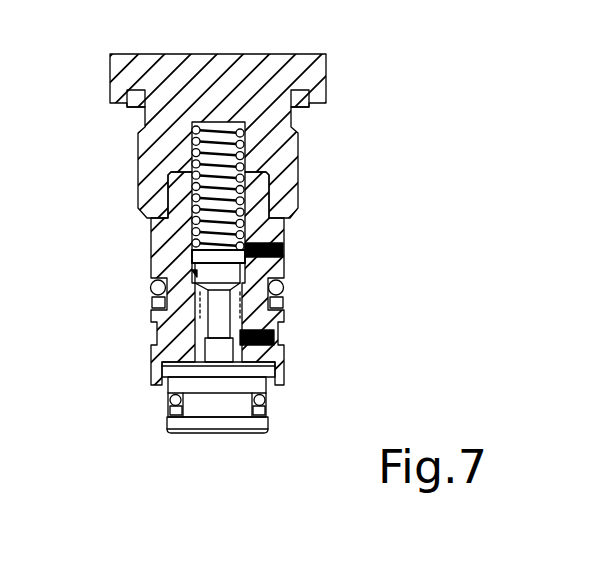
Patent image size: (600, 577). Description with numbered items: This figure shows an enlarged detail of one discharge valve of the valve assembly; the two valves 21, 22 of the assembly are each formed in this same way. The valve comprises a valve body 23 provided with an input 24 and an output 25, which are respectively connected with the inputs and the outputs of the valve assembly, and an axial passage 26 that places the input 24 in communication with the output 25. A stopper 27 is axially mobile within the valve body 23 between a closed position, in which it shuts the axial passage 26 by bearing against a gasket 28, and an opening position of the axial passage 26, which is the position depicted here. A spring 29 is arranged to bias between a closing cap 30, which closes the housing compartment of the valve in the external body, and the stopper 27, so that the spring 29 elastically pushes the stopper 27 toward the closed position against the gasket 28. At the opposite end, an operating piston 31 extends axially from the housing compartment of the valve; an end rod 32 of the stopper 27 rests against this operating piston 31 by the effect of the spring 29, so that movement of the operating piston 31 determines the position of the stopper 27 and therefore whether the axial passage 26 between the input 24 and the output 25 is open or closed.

The valve 21 is at (306, 195).
The valve 22 is at (306, 195).
The valve body 23 is at (159, 265).
The input 24 is at (283, 250).
The output 25 is at (277, 340).
The axial passage 26 is at (276, 333).
The stopper 27 is at (213, 240).
The gasket 28 is at (208, 322).
The spring 29 is at (198, 148).
The closing cap 30 is at (226, 62).
The operating piston 31 is at (219, 423).
The end rod 32 is at (200, 322).